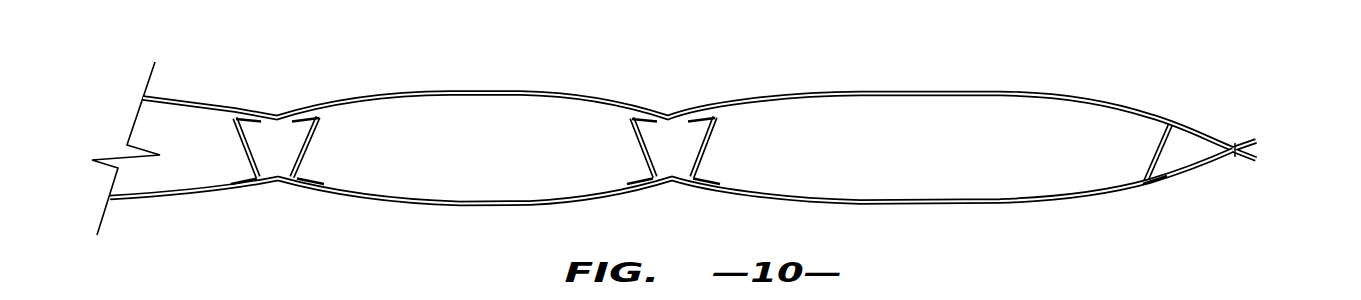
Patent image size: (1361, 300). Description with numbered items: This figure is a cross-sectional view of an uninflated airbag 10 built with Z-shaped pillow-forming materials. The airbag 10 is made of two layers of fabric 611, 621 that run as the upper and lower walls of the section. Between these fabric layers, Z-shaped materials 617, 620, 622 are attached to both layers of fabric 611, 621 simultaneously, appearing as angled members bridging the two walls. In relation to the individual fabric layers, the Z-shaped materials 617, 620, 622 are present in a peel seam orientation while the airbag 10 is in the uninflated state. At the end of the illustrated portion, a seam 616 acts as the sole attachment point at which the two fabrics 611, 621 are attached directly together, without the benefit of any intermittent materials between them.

The airbag 10 is at (721, 149).
The layer of fabric 611 is at (477, 93).
The layer of fabric 621 is at (445, 203).
The Z-shaped material 620 is at (227, 121).
The Z-shaped material 622 is at (323, 122).
The Z-shaped material 617 is at (1147, 125).
The seam 616 is at (1214, 119).